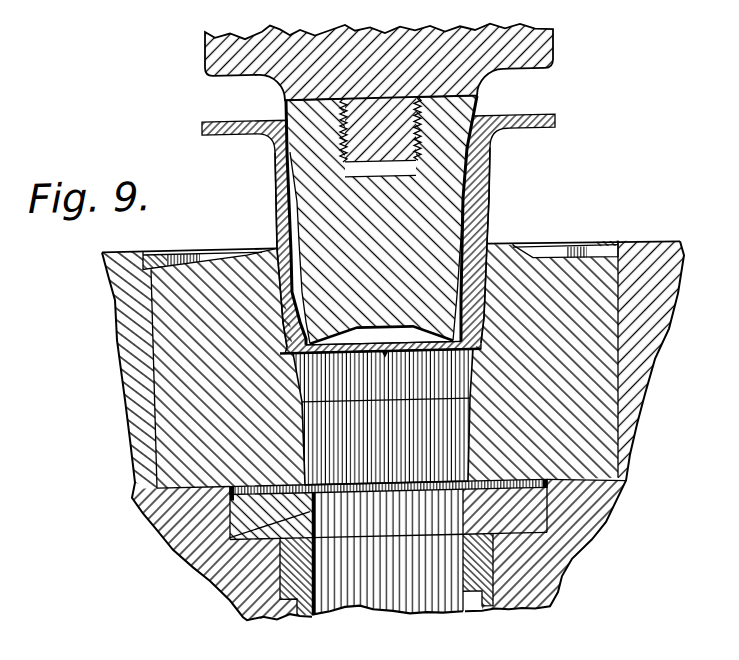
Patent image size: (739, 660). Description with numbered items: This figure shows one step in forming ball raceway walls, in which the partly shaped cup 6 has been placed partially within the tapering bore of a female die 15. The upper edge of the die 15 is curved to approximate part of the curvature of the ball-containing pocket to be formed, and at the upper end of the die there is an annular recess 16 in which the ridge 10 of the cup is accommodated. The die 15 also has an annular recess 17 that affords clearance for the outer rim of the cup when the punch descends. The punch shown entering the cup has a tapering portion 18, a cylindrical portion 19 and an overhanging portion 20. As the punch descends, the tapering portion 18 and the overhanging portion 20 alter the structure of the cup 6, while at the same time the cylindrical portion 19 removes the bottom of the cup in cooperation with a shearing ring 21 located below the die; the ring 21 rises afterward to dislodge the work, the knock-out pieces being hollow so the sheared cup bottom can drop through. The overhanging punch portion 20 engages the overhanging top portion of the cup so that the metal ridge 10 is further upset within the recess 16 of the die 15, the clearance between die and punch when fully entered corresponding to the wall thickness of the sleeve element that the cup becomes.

The overhanging portion 20 is at (556, 51).
The tapering portion 18 is at (466, 109).
The ridge 10 is at (510, 130).
The cup 6 is at (482, 195).
The cylindrical portion 19 is at (463, 245).
The annular recess 16 is at (513, 248).
The female die 15 is at (567, 254).
The annular recess 17 is at (612, 249).
The shearing ring 21 is at (230, 551).